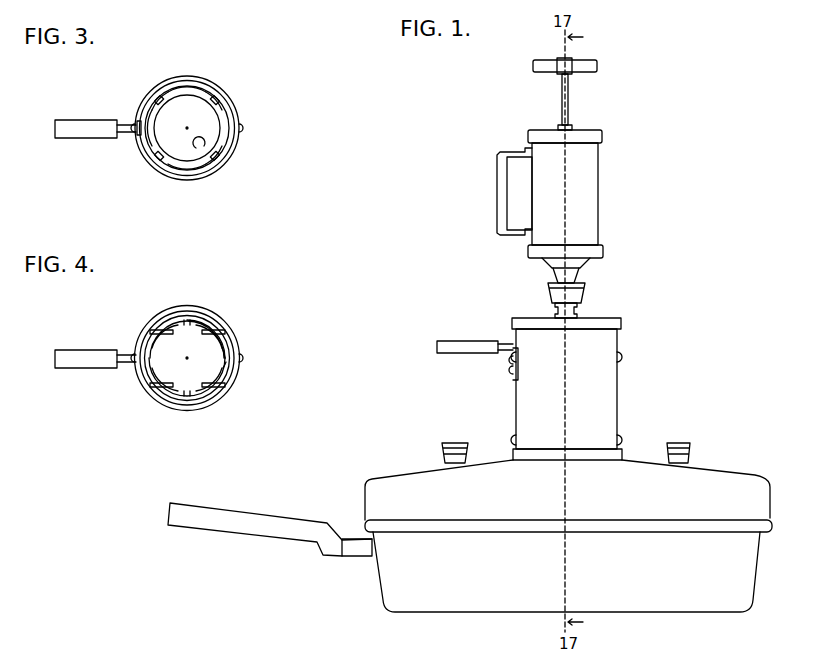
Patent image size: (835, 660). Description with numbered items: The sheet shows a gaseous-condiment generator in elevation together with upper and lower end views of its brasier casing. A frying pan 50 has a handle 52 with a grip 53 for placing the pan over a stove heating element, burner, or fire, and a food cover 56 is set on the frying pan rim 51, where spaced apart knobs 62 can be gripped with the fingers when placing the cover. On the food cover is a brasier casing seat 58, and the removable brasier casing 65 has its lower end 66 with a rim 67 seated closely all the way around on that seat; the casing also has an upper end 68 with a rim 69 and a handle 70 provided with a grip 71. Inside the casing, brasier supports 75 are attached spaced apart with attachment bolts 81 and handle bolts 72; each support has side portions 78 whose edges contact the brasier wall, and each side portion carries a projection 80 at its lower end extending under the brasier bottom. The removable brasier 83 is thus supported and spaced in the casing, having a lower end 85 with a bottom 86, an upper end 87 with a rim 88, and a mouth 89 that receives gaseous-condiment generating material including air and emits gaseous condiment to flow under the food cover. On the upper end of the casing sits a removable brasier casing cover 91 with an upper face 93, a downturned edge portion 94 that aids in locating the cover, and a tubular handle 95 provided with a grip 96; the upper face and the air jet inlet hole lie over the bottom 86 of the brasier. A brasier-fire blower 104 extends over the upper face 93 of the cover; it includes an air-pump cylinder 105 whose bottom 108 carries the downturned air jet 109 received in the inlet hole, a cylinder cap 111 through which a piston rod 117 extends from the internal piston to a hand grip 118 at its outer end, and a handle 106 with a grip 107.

In FIG. 1, the frying pan 50 is at (648, 605).
In FIG. 1, the frying pan rim 51 is at (365, 526).
In FIG. 1, the handle 52 is at (355, 560).
In FIG. 1, the grip 53 is at (225, 537).
In FIG. 1, the food cover 56 is at (385, 474).
In FIG. 1, the brasier casing seat 58 is at (630, 458).
In FIG. 1, the knobs 62 is at (441, 450).
In FIG. 3, the brasier casing 65 is at (147, 94).
In FIG. 4, the brasier casing 65 is at (166, 312).
In FIG. 1, the brasier casing 65 is at (618, 386).
In FIG. 4, the lower end 66 is at (219, 322).
In FIG. 1, the lower end 66 is at (626, 460).
In FIG. 4, the rim 67 is at (160, 414).
In FIG. 1, the rim 67 is at (510, 456).
In FIG. 3, the upper end 68 is at (186, 82).
In FIG. 1, the upper end 68 is at (618, 334).
In FIG. 3, the rim 69 is at (236, 150).
In FIG. 3, the handle 70 is at (118, 140).
In FIG. 4, the handle 70 is at (120, 370).
In FIG. 1, the handle 70 is at (506, 352).
In FIG. 3, the grip 71 is at (80, 120).
In FIG. 4, the grip 71 is at (80, 349).
In FIG. 1, the grip 71 is at (450, 340).
In FIG. 3, the handle bolts 72 is at (148, 148).
In FIG. 1, the handle bolts 72 is at (510, 362).
In FIG. 4, the brasier supports 75 is at (152, 330).
In FIG. 3, the side portions 78 is at (206, 88).
In FIG. 4, the projection 80 is at (189, 320).
In FIG. 3, the attachment bolts 81 is at (243, 128).
In FIG. 4, the attachment bolts 81 is at (136, 355).
In FIG. 1, the attachment bolts 81 is at (622, 358).
In FIG. 3, the brasier 83 is at (168, 94).
In FIG. 4, the brasier 83 is at (240, 358).
In FIG. 4, the lower end 85 is at (228, 372).
In FIG. 3, the bottom 86 is at (202, 124).
In FIG. 4, the bottom 86 is at (167, 366).
In FIG. 3, the upper end 87 is at (185, 168).
In FIG. 3, the rim 88 is at (218, 106).
In FIG. 3, the mouth 89 is at (201, 158).
In FIG. 1, the brasier casing cover 91 is at (520, 316).
In FIG. 1, the upper face 93 is at (540, 316).
In FIG. 1, the downturned edge portion 94 is at (620, 328).
In FIG. 1, the tubular handle 95 is at (577, 312).
In FIG. 1, the grip 96 is at (548, 290).
In FIG. 1, the brasier-fire blower 104 is at (602, 154).
In FIG. 1, the air-pump cylinder 105 is at (596, 193).
In FIG. 1, the handle 106 is at (512, 150).
In FIG. 1, the grip 107 is at (497, 178).
In FIG. 1, the bottom 108 is at (590, 262).
In FIG. 1, the air jet 109 is at (578, 276).
In FIG. 1, the cylinder cap 111 is at (596, 128).
In FIG. 1, the piston rod 117 is at (560, 99).
In FIG. 1, the hand grip 118 is at (590, 56).